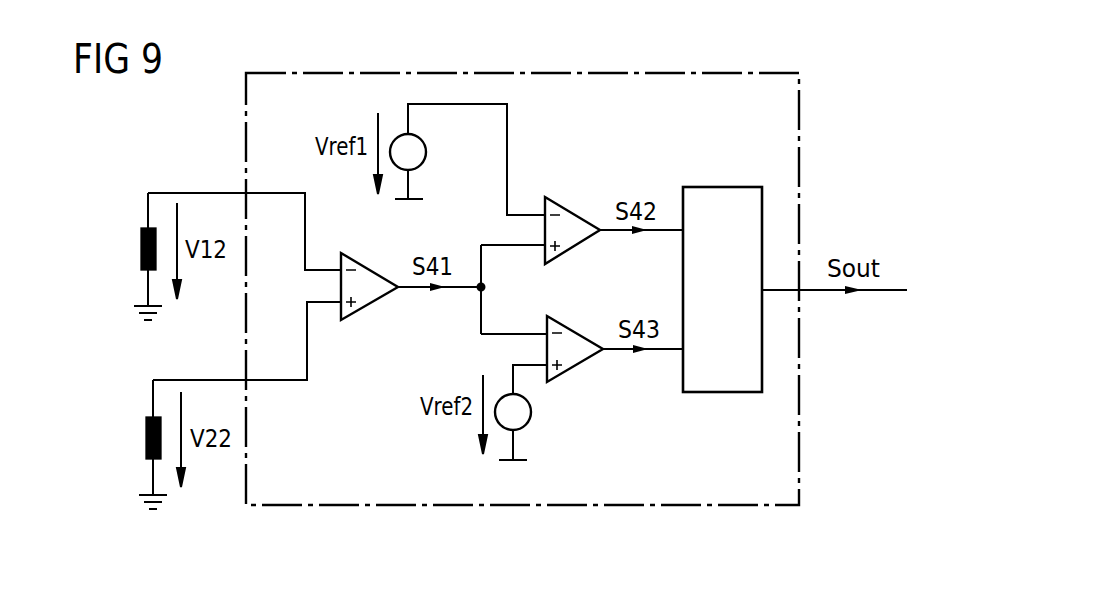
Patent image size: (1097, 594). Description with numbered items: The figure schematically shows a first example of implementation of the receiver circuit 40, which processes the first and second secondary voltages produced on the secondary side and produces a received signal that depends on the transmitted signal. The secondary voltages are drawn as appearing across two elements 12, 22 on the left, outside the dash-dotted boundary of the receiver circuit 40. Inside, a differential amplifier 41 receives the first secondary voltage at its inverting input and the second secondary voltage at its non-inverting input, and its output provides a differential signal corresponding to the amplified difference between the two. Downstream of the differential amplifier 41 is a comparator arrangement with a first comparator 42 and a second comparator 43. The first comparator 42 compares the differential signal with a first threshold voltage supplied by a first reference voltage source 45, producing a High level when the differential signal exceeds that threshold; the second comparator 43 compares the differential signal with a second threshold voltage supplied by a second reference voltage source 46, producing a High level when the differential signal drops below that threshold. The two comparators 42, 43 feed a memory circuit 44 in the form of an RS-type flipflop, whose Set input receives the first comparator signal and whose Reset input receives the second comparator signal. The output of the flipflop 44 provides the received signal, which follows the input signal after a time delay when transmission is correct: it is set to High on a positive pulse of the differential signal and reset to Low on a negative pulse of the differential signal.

The first shunt resistor 12 is at (141, 250).
The second shunt resistor 22 is at (146, 440).
The receiver circuit 40 is at (545, 506).
The differential amplifier 41 is at (369, 264).
The first comparator 42 is at (572, 209).
The second comparator 43 is at (573, 329).
The memory circuit 44 is at (720, 187).
The first reference voltage source 45 is at (427, 152).
The second reference voltage source 46 is at (532, 412).